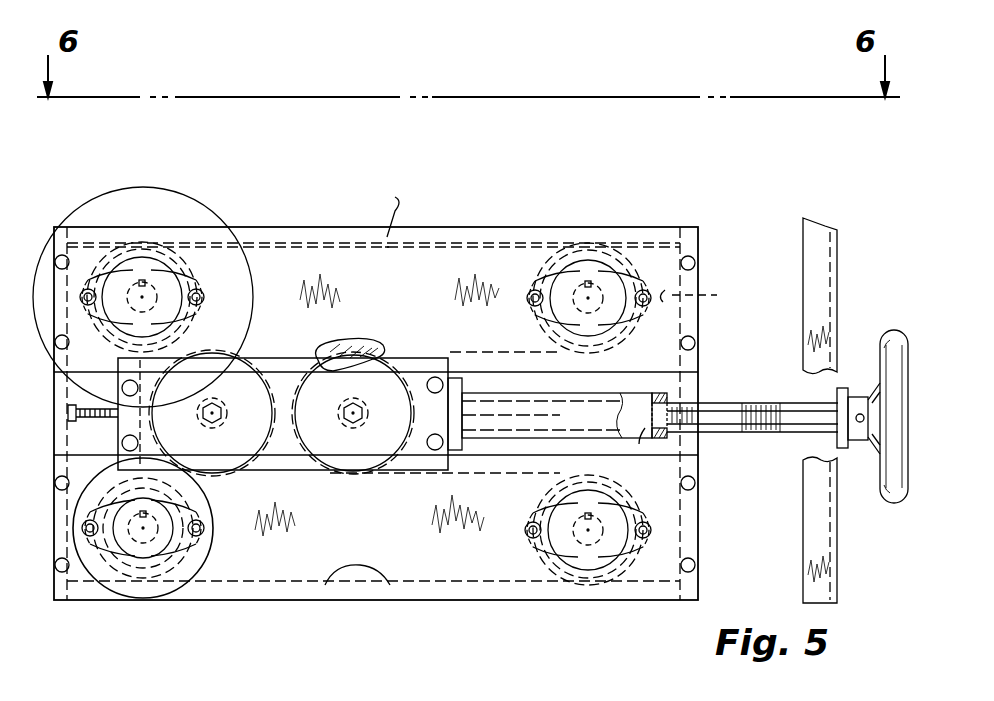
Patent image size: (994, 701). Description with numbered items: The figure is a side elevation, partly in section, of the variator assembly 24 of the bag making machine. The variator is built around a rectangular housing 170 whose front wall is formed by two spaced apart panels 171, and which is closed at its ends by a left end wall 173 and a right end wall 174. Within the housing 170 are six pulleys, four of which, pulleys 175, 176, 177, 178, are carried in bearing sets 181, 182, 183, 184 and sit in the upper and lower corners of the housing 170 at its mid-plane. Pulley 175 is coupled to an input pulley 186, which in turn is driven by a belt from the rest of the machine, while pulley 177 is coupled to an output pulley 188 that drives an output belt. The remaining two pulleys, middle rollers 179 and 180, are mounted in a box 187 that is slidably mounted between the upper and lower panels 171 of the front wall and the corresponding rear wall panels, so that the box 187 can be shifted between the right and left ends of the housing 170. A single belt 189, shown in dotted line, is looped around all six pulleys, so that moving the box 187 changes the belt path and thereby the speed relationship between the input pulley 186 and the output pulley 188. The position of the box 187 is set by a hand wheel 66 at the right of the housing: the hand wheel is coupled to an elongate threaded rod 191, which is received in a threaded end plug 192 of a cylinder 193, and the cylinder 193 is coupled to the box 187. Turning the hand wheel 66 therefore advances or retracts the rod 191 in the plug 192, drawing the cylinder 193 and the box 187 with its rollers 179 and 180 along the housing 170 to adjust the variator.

The variator assembly 24 is at (245, 178).
The hand wheel knob 66 is at (893, 330).
The rectangular housing 170 is at (317, 222).
The front wall panels 171 is at (440, 252).
The left end wall 173 is at (78, 227).
The right end wall 174 is at (706, 301).
The pulley 175 is at (133, 228).
The pulley 176 is at (620, 250).
The pulley 177 is at (194, 563).
The pulley 178 is at (544, 575).
The middle roller 179 is at (251, 470).
The middle roller 180 is at (386, 470).
The bearing set 181 is at (210, 282).
The bearing set 182 is at (535, 262).
The bearing set 183 is at (214, 528).
The bearing set 184 is at (632, 588).
The input pulley 186 is at (139, 153).
The box 187 is at (295, 340).
The output pulley 188 is at (142, 596).
The belt 189 is at (350, 625).
The elongate threaded rod 191 is at (775, 370).
The threaded end plug 192 is at (660, 392).
The cylinder 193 is at (646, 452).